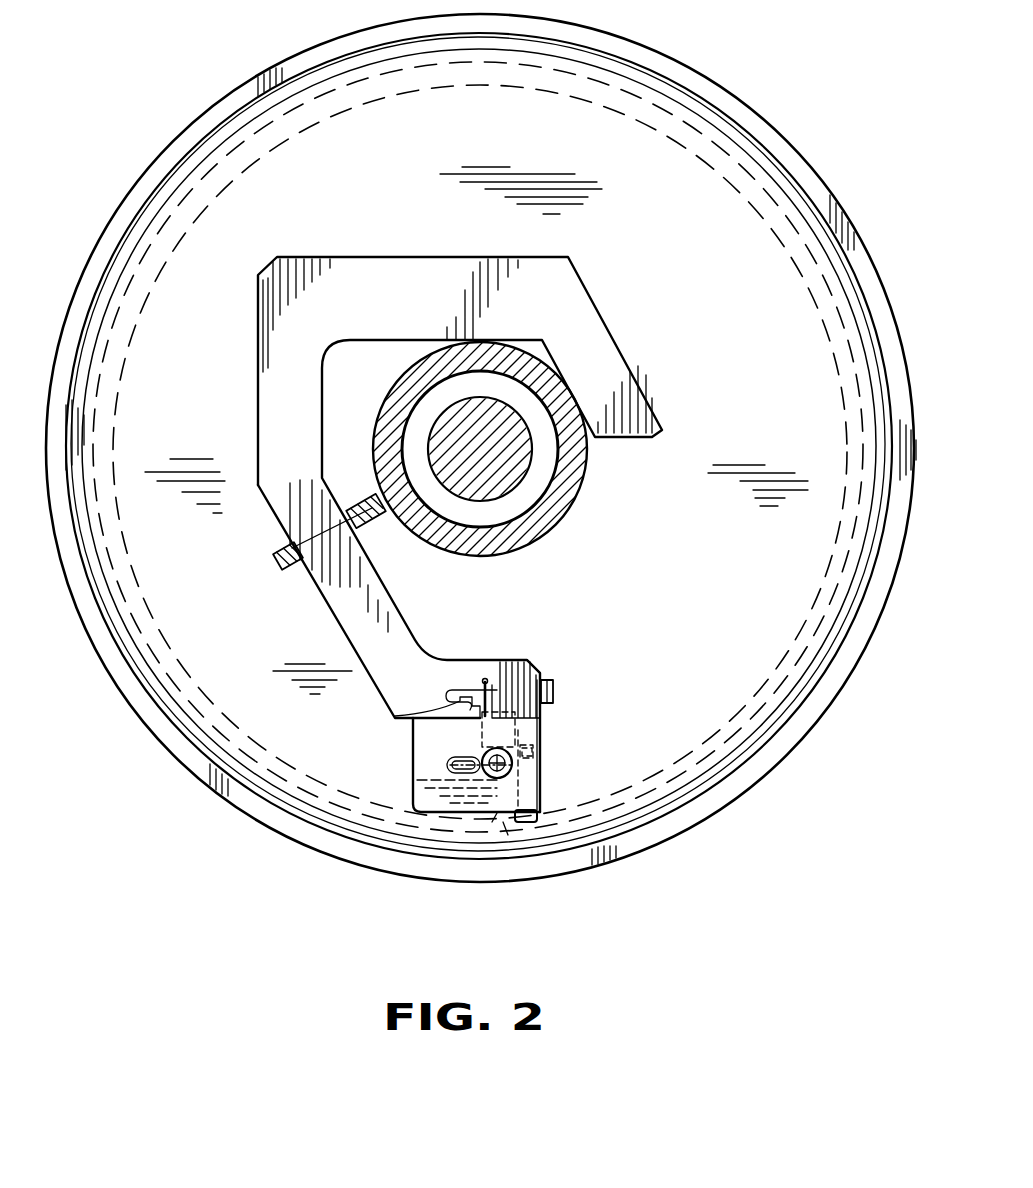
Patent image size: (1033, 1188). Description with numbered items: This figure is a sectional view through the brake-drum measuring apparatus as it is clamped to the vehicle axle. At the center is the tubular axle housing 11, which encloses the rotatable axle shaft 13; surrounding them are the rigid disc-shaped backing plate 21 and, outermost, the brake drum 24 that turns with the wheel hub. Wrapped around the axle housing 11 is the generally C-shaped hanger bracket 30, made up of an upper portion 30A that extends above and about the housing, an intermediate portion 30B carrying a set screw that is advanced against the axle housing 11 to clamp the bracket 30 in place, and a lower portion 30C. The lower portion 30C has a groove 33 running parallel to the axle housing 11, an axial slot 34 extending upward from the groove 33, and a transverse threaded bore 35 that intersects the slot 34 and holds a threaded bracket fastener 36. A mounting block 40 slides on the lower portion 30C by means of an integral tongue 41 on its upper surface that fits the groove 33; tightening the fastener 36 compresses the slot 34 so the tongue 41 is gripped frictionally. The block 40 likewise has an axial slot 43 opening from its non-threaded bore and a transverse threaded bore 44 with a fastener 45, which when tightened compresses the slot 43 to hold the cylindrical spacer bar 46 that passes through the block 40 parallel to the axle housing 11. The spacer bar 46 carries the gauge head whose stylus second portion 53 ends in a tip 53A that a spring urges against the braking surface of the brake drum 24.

The brake drum 24 is at (783, 150).
The backing plate 21 is at (727, 298).
The axle housing 11 is at (563, 503).
The axle shaft 13 is at (468, 492).
The hanger bracket 30 is at (422, 506).
The upper portion 30A is at (396, 275).
The intermediate portion 30B is at (338, 603).
The lower portion 30C is at (450, 673).
The groove 33 is at (395, 716).
The axial slot 34 is at (497, 673).
The transverse threaded bore 35 is at (539, 671).
The threaded bracket fastener 36 is at (553, 686).
The mounting block 40 is at (413, 790).
The tongue 41 is at (472, 720).
The spacer bar 46 is at (510, 748).
The axial slot 43 is at (533, 759).
The transverse threaded bore 44 is at (543, 773).
The threaded bracket fastener 45 is at (533, 818).
The second portion 53 is at (505, 824).
The stylus tip 53A is at (497, 814).